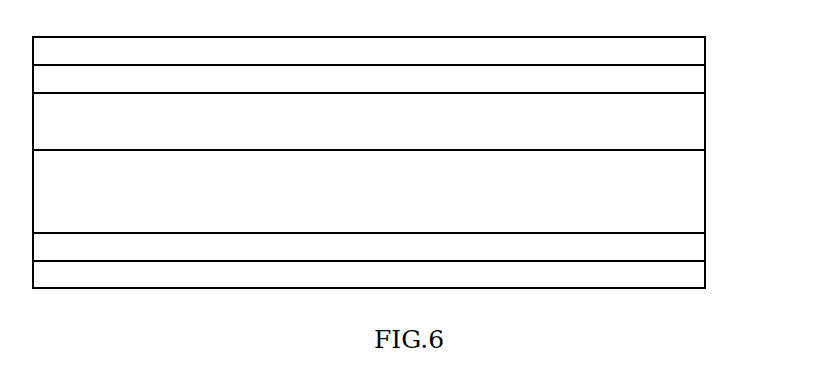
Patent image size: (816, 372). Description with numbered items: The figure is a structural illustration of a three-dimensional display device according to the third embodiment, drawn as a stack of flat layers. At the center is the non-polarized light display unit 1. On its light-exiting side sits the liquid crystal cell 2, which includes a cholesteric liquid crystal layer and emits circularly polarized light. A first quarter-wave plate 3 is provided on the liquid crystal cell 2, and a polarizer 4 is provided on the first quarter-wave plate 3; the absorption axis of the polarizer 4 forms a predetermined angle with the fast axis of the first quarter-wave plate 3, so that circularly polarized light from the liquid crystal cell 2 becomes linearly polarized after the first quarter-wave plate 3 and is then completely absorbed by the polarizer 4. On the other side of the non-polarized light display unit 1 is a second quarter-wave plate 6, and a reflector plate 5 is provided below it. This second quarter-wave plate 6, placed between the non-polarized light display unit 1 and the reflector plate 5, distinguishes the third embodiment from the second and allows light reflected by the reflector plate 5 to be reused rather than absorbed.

The non-polarized light display unit 1 is at (705, 192).
The liquid crystal cell 2 is at (705, 122).
The first quarter-wave plate 3 is at (705, 80).
The polarizer 4 is at (705, 52).
The reflector plate 5 is at (705, 275).
The second quarter-wave plate 6 is at (705, 248).